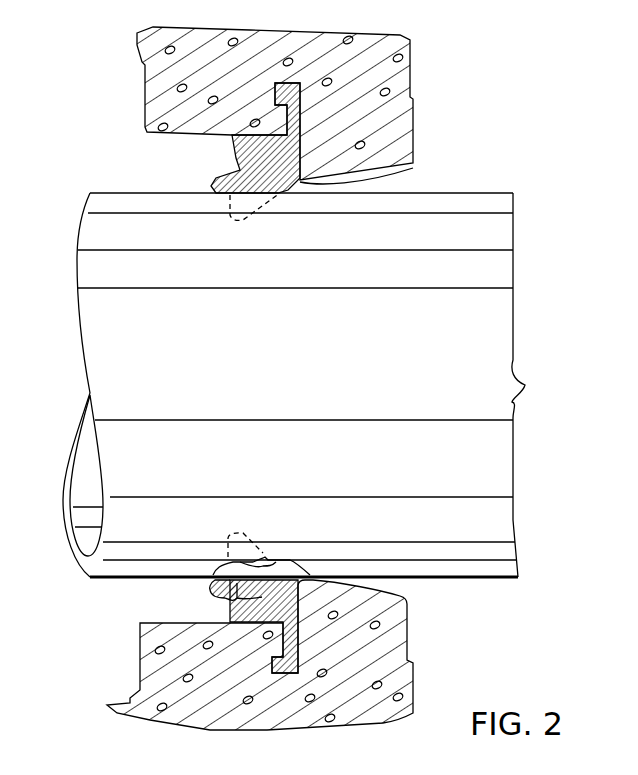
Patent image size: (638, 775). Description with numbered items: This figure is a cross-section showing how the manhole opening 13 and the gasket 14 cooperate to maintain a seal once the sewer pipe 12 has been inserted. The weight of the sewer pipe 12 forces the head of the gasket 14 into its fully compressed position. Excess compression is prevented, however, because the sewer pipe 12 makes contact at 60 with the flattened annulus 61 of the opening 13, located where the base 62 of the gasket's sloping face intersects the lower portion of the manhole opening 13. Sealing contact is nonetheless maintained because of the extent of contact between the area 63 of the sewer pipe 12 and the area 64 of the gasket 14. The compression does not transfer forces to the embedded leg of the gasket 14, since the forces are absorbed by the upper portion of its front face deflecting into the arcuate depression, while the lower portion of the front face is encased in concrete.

The sewer pipe 12 is at (463, 353).
The manhole opening 13 is at (230, 136).
The gasket 14 is at (295, 147).
The contact point of the sewer pipe 60 is at (317, 585).
The flattened annulus 61 is at (302, 181).
The base of the sloping face 62 is at (300, 577).
The contact area of the sewer pipe 63 is at (263, 562).
The contact area of the gasket 64 is at (232, 600).